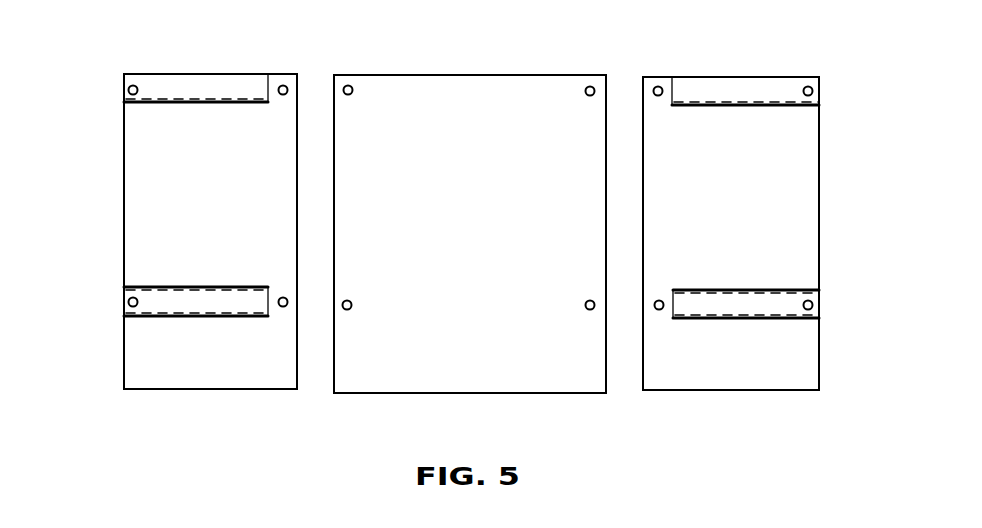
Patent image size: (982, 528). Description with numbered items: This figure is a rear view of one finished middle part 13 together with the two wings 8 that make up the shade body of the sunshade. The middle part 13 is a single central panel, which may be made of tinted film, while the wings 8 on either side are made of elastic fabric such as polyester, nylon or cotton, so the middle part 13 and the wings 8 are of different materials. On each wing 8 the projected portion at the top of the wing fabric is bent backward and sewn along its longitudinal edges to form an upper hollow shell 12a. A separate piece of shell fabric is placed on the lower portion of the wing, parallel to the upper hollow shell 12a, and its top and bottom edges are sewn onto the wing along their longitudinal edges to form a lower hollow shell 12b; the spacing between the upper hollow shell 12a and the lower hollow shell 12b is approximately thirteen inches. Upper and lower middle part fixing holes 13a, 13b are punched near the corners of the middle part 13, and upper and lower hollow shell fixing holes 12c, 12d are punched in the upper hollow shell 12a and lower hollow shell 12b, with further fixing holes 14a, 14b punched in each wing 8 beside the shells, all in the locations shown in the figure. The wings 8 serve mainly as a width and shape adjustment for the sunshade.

The wings 8 is at (190, 193).
The upper hollow shell 12a is at (750, 92).
The lower hollow shell 12b is at (750, 303).
The upper hollow shell fixing hole 12c is at (813, 91).
The lower hollow shell fixing hole 12d is at (813, 305).
The middle part 13 is at (423, 190).
The upper middle part fixing hole 13a is at (590, 87).
The lower middle part fixing hole 13b is at (590, 310).
The upper hollow shell fixing hole 14a is at (658, 86).
The lower hollow shell fixing hole 14b is at (660, 310).